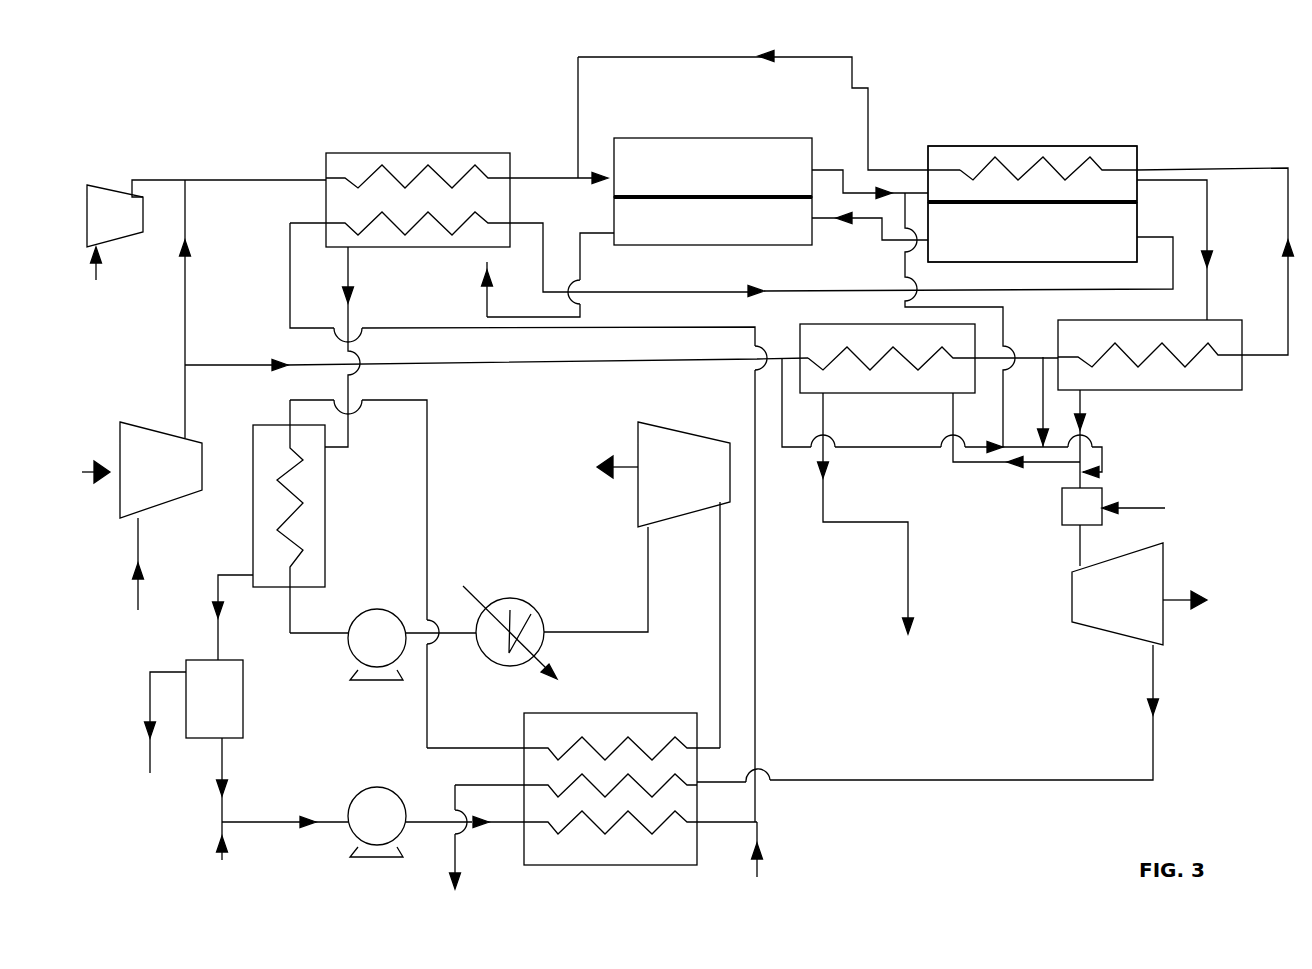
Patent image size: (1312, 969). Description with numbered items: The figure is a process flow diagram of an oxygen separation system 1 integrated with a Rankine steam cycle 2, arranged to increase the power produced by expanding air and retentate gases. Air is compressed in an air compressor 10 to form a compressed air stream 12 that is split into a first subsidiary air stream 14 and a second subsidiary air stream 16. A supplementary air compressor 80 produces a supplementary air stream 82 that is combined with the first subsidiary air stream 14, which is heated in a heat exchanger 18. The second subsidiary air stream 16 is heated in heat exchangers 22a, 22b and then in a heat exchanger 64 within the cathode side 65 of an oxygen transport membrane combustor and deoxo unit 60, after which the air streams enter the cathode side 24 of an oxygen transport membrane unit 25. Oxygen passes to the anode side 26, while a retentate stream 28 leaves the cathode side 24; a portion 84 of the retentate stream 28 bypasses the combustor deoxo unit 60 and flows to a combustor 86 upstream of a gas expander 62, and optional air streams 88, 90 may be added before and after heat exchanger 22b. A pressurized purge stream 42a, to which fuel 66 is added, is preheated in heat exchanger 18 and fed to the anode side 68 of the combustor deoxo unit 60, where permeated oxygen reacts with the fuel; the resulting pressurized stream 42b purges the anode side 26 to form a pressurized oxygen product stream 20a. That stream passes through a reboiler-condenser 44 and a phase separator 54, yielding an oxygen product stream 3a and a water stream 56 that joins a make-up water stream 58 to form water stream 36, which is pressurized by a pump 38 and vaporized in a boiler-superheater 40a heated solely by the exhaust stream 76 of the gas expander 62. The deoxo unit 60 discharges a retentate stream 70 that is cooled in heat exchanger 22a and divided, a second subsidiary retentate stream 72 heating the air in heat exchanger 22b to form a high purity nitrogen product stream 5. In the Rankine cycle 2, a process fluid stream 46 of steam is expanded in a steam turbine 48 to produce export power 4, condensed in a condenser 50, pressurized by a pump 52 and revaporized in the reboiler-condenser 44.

The oxygen separation system 1 is at (500, 104).
The Rankine steam cycle 2 is at (471, 448).
The oxygen product stream 3a is at (150, 752).
The export power 4 is at (605, 482).
The high purity nitrogen product stream 5 is at (908, 588).
The air compressor 10 is at (135, 498).
The compressed air stream 12 is at (185, 396).
The first subsidiary air stream 14 is at (185, 339).
The second subsidiary air stream 16 is at (230, 368).
The heat exchanger 18 is at (417, 153).
The pressurized oxygen product stream 20a is at (487, 292).
The heat exchanger 22a is at (1200, 375).
The heat exchanger 22b is at (892, 382).
The cathode side 24 is at (713, 167).
The oxygen transport membrane unit 25 is at (713, 167).
The anode side 26 is at (713, 221).
The retentate stream 28 is at (826, 170).
The water stream 36 is at (282, 827).
The water pump 38 is at (380, 803).
The boiler-superheater 40a is at (535, 855).
The pressurized purge stream 42a is at (757, 667).
The pressurized stream 42b is at (883, 240).
The reboiler-condenser 44 is at (325, 515).
The process fluid stream 46 is at (427, 560).
The steam turbine 48 is at (698, 455).
The condenser 50 is at (537, 607).
The pump 52 is at (367, 635).
The phase separator 54 is at (203, 722).
The water stream 56 is at (222, 806).
The make-up water stream 58 is at (220, 828).
The oxygen transport membrane combustor and deoxo unit 60 is at (1095, 229).
The gas expander 62 is at (1097, 617).
The heat exchanger 64 is at (1007, 172).
The cathode side 65 is at (1032, 174).
The fuel 66 is at (760, 835).
The anode side 68 is at (1032, 232).
The retentate stream 70 is at (1208, 226).
The second subsidiary retentate stream 72 is at (1036, 463).
The exhaust stream 76 is at (972, 784).
The supplementary air compressor 80 is at (110, 205).
The supplementary air stream 82 is at (160, 175).
The portion of retentate stream 84 is at (905, 307).
The combustor 86 is at (1073, 517).
The air stream 88 is at (882, 452).
The air stream 90 is at (1043, 412).